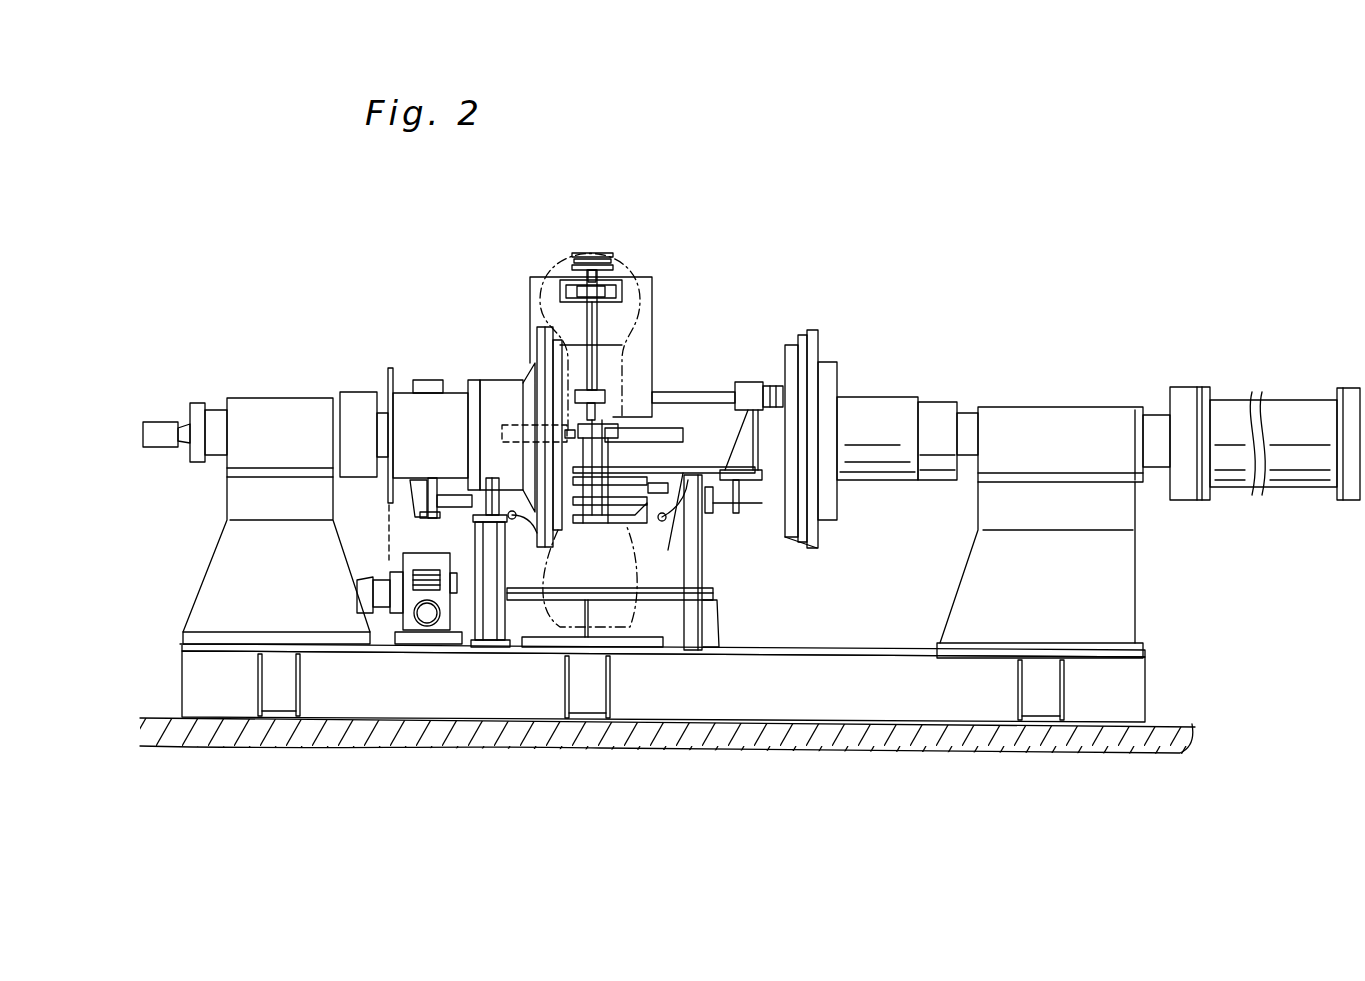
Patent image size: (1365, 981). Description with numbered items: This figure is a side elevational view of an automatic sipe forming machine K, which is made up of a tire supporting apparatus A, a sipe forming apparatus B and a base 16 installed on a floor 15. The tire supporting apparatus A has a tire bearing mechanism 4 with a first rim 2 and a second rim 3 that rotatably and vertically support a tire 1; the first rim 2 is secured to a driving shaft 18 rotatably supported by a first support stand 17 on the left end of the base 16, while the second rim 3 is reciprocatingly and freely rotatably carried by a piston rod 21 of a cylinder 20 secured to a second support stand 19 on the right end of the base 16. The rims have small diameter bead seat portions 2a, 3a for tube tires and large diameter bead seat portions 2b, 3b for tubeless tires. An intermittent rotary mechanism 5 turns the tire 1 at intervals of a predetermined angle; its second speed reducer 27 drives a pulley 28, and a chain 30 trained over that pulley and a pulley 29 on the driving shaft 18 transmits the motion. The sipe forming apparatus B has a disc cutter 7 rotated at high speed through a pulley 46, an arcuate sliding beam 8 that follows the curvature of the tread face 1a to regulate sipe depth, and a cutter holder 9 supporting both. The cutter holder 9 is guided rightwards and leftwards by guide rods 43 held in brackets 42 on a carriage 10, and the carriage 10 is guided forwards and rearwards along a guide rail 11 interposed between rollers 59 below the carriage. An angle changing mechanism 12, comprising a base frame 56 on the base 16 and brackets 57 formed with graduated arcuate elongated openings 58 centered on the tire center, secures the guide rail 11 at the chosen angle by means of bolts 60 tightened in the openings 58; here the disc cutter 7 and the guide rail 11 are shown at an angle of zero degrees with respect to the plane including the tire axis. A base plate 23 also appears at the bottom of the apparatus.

The automatic sipe forming machine K is at (952, 302).
The tire supporting apparatus A is at (350, 386).
The sipe forming apparatus B is at (662, 272).
The tire 1 is at (593, 240).
The tread face 1a is at (568, 242).
The first rim 2 is at (537, 340).
The small diameter bead seat portion 2a is at (566, 343).
The large diameter bead seat portion 2b is at (556, 342).
The second rim 3 is at (814, 330).
The small diameter bead seat portion 3a is at (791, 345).
The large diameter bead seat portion 3b is at (803, 335).
The tire bearing mechanism 4 is at (476, 374).
The intermittent rotary mechanism 5 is at (370, 578).
The disc cutter 7 is at (630, 436).
The arcuate sliding beam 8 is at (672, 438).
The cutter holder 9 is at (646, 305).
The carriage 10 is at (778, 534).
The guide rail 11 is at (713, 506).
The angle changing mechanism 12 is at (710, 562).
The floor 15 is at (1168, 725).
The base 16 is at (850, 668).
The first support stand 17 is at (255, 408).
The driving shaft 18 is at (408, 405).
The second support stand 19 is at (1076, 418).
The cylinder 20 is at (1280, 490).
The piston rod 21 is at (967, 430).
The base plate 23 is at (648, 647).
The second speed reducer 27 is at (503, 522).
The pulley 28 is at (398, 578).
The pulley 29 is at (389, 365).
The chain 30 is at (388, 520).
The brackets 42 is at (750, 440).
The guide rods 43 is at (702, 393).
The pulley 46 is at (612, 262).
The base frame 56 is at (715, 640).
The brackets 57 is at (686, 580).
The graduated arcuate elongated openings 58 is at (513, 521).
The rollers 59 is at (727, 478).
The bolts 60 is at (483, 520).